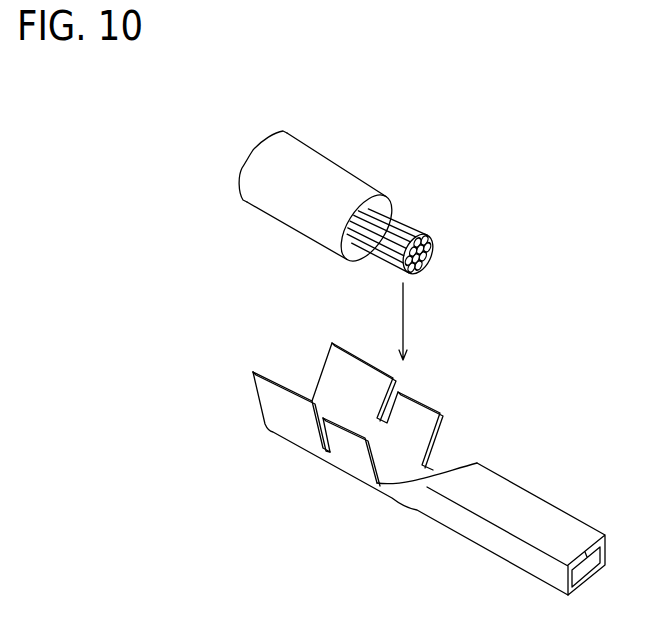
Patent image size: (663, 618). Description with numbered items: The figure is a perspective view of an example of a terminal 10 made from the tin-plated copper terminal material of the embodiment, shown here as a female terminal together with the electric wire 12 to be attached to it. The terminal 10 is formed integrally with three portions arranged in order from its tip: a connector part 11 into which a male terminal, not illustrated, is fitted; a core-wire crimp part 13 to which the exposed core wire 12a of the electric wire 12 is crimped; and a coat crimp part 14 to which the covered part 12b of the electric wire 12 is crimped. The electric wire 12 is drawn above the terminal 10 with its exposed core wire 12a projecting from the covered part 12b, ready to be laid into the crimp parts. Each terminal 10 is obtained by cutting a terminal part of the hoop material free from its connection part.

The terminal 10 is at (405, 469).
The connector part 11 is at (553, 520).
The electric wire 12 is at (394, 171).
The exposed core wire 12a is at (432, 247).
The covered part 12b is at (285, 192).
The core-wire crimp part 13 is at (420, 400).
The coat crimp part 14 is at (270, 397).